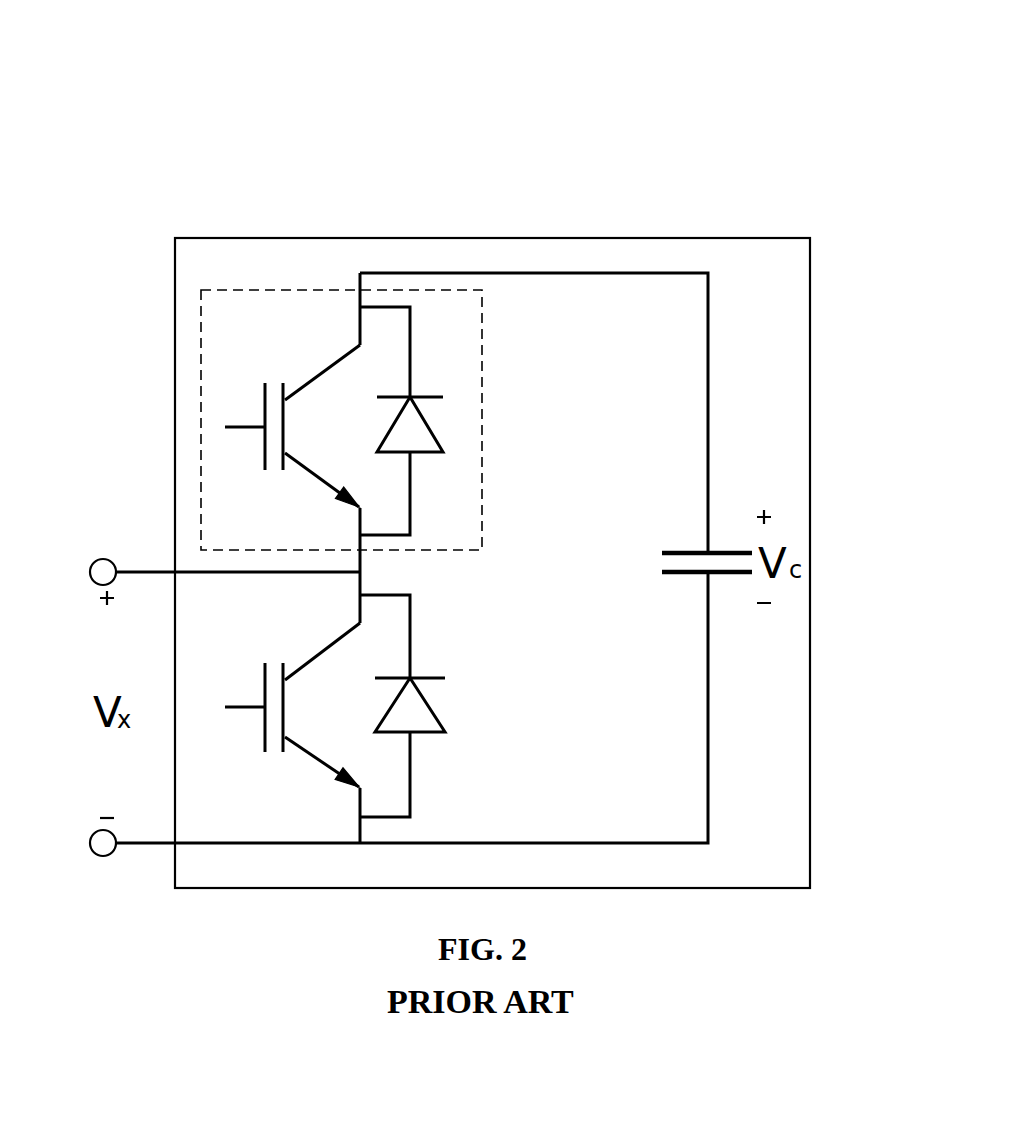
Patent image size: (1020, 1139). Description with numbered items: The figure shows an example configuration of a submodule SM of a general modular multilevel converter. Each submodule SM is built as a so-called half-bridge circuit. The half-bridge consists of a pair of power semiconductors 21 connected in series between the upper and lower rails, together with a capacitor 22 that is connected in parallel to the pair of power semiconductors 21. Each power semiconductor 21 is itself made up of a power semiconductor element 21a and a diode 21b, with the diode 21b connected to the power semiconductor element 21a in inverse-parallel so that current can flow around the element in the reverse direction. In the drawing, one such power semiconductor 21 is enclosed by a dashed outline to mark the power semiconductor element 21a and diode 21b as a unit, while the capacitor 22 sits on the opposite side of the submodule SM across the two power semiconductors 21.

The submodule SM is at (492, 453).
The power semiconductor 21 is at (197, 323).
The power semiconductor element 21a is at (323, 370).
The diode 21b is at (437, 397).
The capacitor 22 is at (732, 553).